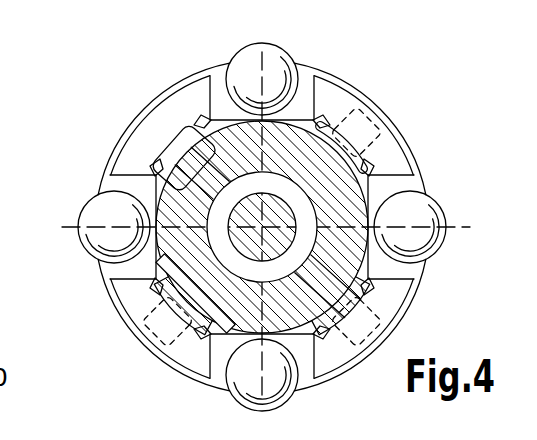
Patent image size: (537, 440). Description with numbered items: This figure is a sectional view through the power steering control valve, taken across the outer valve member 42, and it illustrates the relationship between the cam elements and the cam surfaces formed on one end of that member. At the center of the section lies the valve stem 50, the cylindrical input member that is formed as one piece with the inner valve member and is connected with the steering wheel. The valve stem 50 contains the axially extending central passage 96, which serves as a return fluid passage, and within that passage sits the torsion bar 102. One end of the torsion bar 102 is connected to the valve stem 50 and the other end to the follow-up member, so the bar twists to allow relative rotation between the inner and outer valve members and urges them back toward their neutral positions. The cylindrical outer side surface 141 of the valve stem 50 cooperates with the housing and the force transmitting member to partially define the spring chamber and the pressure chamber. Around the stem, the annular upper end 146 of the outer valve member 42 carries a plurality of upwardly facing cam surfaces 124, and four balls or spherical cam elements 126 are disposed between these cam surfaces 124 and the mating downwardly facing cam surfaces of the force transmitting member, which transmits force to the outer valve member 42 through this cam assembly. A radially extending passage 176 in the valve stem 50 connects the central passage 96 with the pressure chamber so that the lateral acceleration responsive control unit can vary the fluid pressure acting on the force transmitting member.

The outer valve member 42 is at (156, 104).
The valve stem 50 is at (330, 167).
The central passage 96 is at (372, 290).
The torsion bar 102 is at (273, 237).
The cam surfaces 124 is at (219, 66).
The cam elements 126 is at (285, 60).
The outer side surface 141 is at (303, 126).
The annular upper end 146 is at (138, 150).
The radially extending passage 176 is at (168, 292).